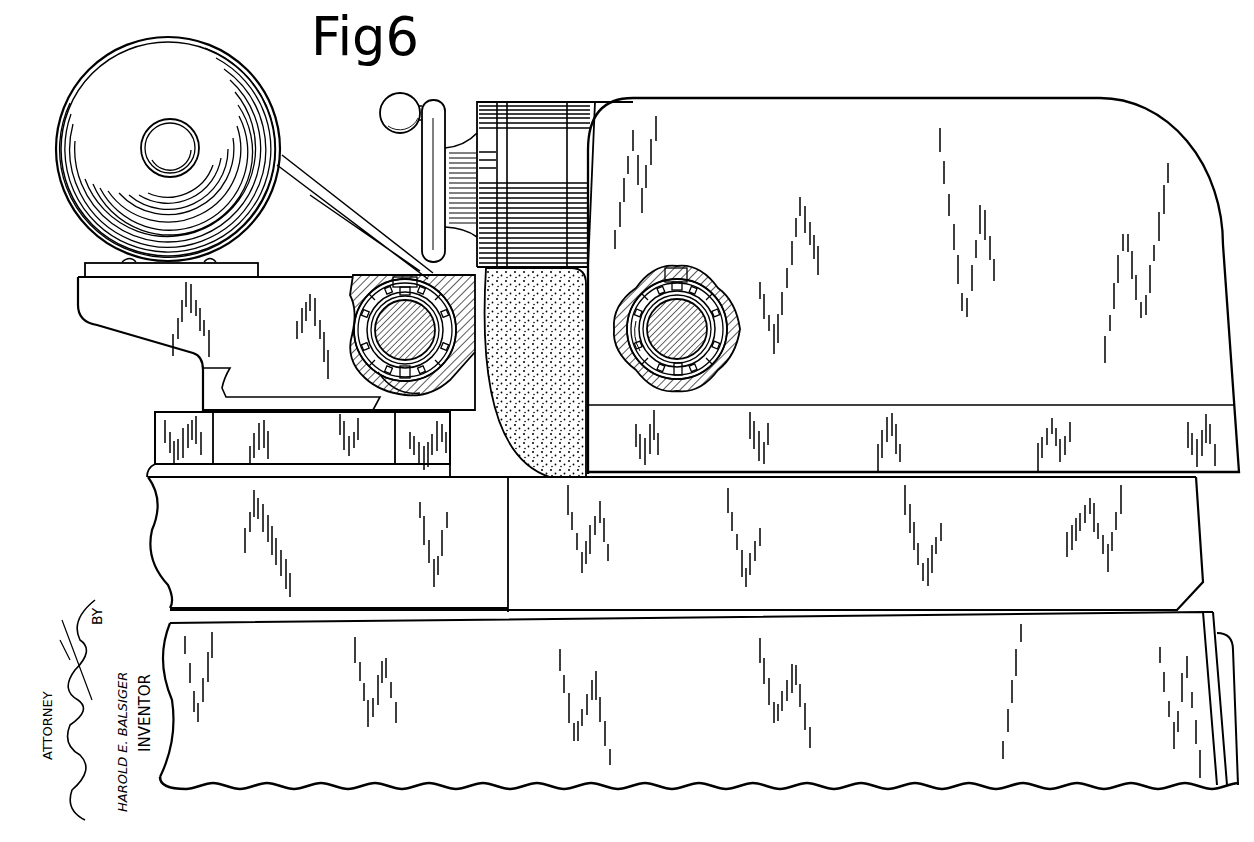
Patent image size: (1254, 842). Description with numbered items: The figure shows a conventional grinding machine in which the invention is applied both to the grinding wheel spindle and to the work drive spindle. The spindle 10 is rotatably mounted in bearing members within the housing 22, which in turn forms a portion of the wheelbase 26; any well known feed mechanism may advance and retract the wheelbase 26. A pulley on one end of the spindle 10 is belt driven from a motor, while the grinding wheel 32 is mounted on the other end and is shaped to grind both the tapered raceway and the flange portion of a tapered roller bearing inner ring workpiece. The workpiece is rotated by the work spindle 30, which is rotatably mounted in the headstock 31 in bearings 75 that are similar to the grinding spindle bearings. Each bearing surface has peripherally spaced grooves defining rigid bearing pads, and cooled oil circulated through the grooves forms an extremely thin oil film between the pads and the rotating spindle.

The spindle 10 is at (680, 350).
The housing 22 is at (687, 322).
The wheelbase 26 is at (1052, 102).
The work spindle 30 is at (380, 312).
The headstock 31 is at (135, 327).
The grinding wheel 32 is at (512, 410).
The bearings 75 is at (382, 370).